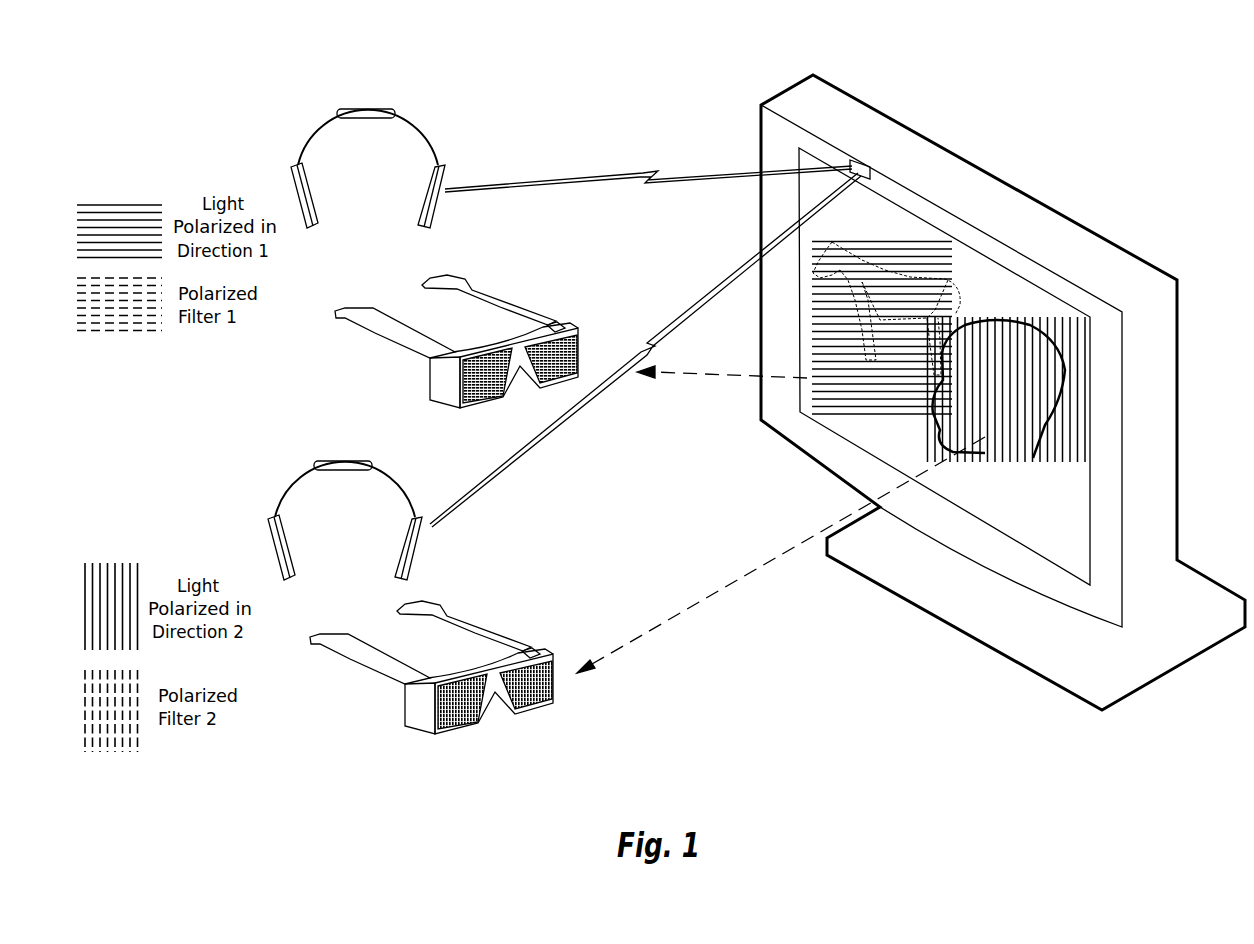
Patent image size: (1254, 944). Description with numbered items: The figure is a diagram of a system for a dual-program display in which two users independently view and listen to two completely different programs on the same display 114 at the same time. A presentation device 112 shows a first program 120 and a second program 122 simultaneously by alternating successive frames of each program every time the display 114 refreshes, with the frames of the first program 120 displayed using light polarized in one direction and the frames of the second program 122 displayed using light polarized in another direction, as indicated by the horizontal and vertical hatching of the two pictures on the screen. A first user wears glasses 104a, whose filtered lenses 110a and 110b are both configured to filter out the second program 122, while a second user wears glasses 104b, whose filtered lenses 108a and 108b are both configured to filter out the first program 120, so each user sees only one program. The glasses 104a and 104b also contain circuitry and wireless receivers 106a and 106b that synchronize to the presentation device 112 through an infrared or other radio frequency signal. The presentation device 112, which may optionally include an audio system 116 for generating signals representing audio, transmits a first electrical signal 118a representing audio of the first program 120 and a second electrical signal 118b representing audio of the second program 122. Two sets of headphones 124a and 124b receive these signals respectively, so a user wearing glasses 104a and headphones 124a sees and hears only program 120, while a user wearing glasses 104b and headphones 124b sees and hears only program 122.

The glasses 104a is at (486, 336).
The glasses 104b is at (441, 675).
The wireless receiver 106a is at (556, 325).
The wireless receiver 106b is at (530, 652).
The filtered lens 108a is at (457, 717).
The filtered lens 108b is at (533, 703).
The filtered lens 110a is at (475, 378).
The filtered lens 110b is at (562, 366).
The presentation device 112 is at (837, 82).
The display 114 is at (883, 435).
The audio system 116 is at (852, 166).
The first electrical signal 118a is at (587, 178).
The second electrical signal 118b is at (688, 315).
The first program 120 is at (887, 253).
The second program 122 is at (1003, 328).
The headphones 124a is at (375, 112).
The headphones 124b is at (330, 463).